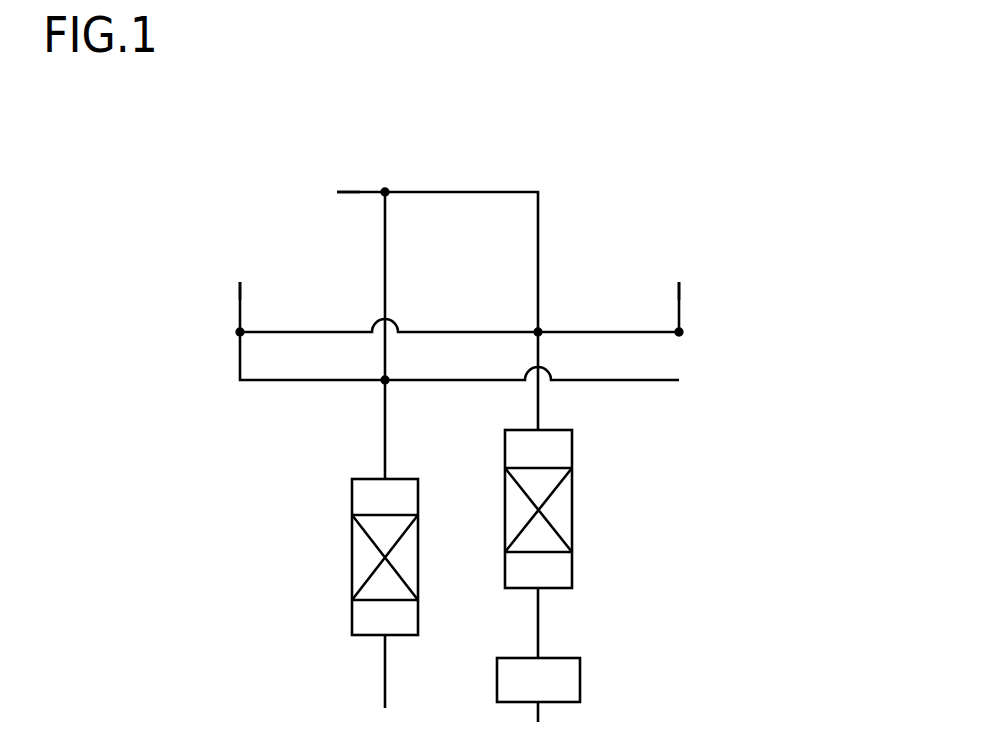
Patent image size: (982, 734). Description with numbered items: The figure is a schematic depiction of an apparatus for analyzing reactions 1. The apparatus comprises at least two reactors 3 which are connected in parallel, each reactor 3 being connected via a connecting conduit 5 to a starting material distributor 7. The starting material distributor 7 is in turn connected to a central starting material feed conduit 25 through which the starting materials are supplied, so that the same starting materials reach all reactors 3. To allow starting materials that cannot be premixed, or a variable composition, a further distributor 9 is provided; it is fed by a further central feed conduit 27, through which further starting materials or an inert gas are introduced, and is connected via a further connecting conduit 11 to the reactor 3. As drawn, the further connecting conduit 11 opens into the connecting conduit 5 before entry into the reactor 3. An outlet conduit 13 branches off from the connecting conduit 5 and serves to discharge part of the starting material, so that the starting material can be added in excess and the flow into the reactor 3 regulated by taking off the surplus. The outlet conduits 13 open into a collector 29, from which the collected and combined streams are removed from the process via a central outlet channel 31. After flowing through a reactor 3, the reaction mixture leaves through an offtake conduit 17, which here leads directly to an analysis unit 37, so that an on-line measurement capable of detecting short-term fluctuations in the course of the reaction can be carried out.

The apparatus for analyzing reactions 1 is at (749, 161).
The reactor 3 is at (350, 552).
The connecting conduit 5 is at (388, 280).
The starting material distributor 7 is at (388, 187).
The further distributor 9 is at (683, 333).
The further connecting conduit 11 is at (588, 330).
The outlet conduit 13 is at (304, 330).
The offtake conduit 17 is at (383, 682).
The central starting material feed conduit 25 is at (357, 190).
The further central feed conduit 27 is at (683, 300).
The collector 29 is at (237, 332).
The central outlet channel 31 is at (236, 284).
The analysis unit 37 is at (582, 677).